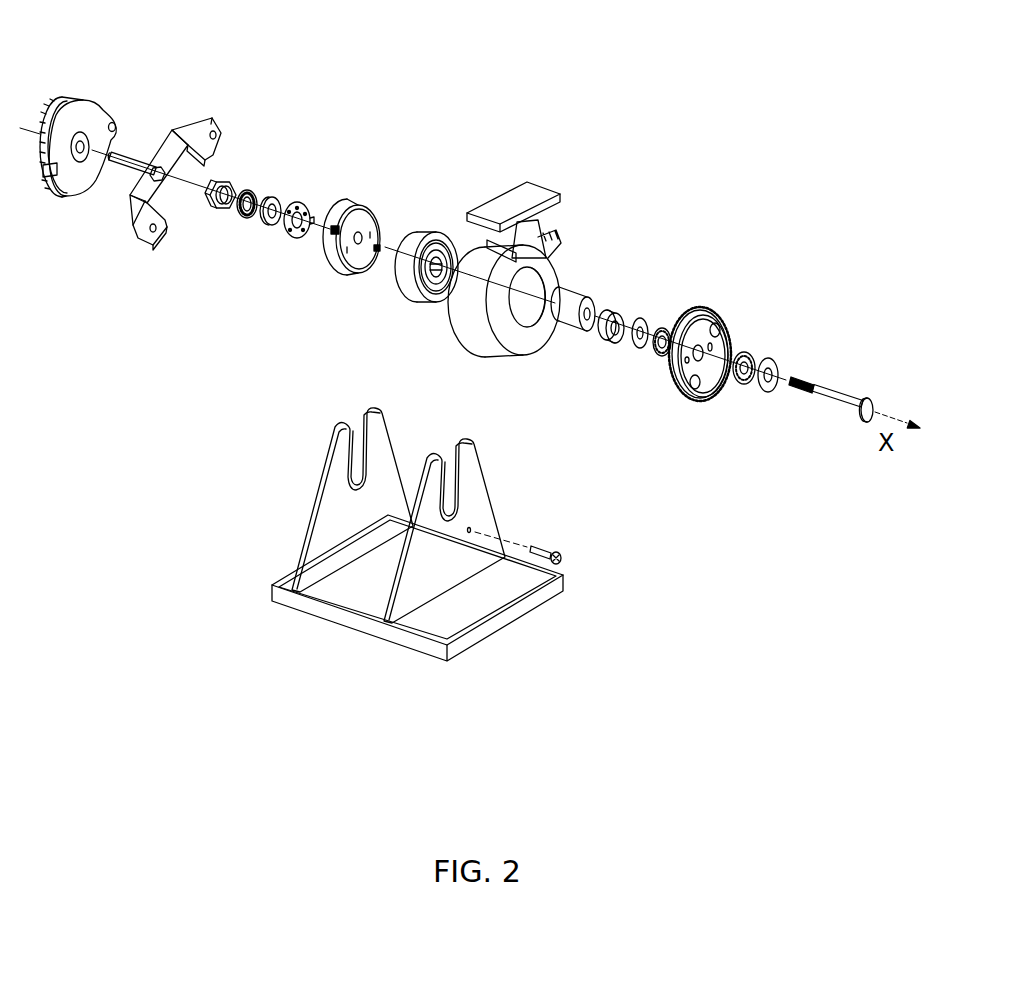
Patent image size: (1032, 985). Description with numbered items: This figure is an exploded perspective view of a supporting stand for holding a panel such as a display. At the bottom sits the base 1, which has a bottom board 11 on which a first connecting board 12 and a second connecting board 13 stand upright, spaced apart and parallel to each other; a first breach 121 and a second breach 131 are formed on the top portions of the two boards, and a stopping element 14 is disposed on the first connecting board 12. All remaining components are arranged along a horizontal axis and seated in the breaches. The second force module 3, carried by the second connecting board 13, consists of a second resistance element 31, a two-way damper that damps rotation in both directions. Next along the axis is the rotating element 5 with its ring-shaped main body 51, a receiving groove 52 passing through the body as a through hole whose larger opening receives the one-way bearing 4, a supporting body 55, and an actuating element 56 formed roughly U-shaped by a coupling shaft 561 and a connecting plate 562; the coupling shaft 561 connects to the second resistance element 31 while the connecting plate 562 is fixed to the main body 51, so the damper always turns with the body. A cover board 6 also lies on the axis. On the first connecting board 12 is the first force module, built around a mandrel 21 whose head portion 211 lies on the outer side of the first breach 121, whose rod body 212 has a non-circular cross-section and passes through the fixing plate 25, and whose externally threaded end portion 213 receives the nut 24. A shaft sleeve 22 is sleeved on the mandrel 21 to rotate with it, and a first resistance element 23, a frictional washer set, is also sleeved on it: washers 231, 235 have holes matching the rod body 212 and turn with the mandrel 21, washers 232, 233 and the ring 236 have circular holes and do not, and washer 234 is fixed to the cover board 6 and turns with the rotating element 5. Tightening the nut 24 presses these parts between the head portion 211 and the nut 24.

The base 1 is at (390, 534).
The bottom board 11 is at (542, 578).
The first connecting board 12 is at (469, 531).
The first breach 121 is at (448, 472).
The second connecting board 13 is at (326, 500).
The second breach 131 is at (358, 458).
The stopping element 14 is at (555, 550).
The mandrel 21 is at (845, 355).
The head portion 211 is at (886, 385).
The rod body 212 is at (837, 393).
The end portion 213 is at (803, 380).
The shaft sleeve 22 is at (572, 300).
The first resistance element 23 is at (490, 334).
The washer 231 is at (637, 345).
The washer 232 is at (660, 353).
The washer 233 is at (240, 223).
The washer 234 is at (298, 228).
The washer 235 is at (265, 230).
The ring 236 is at (607, 337).
The nut 24 is at (227, 183).
The fixing plate 25 is at (707, 310).
The second force module 3 is at (78, 175).
The second resistance element 31 is at (64, 107).
The one-way bearing 4 is at (427, 228).
The rotating element 5 is at (371, 198).
The ring-shaped main body 51 is at (460, 320).
The receiving groove 52 is at (518, 302).
The supporting body 55 is at (514, 194).
The actuating element 56 is at (173, 138).
The coupling shaft 561 is at (135, 162).
The connecting plate 562 is at (175, 166).
The cover board 6 is at (360, 200).